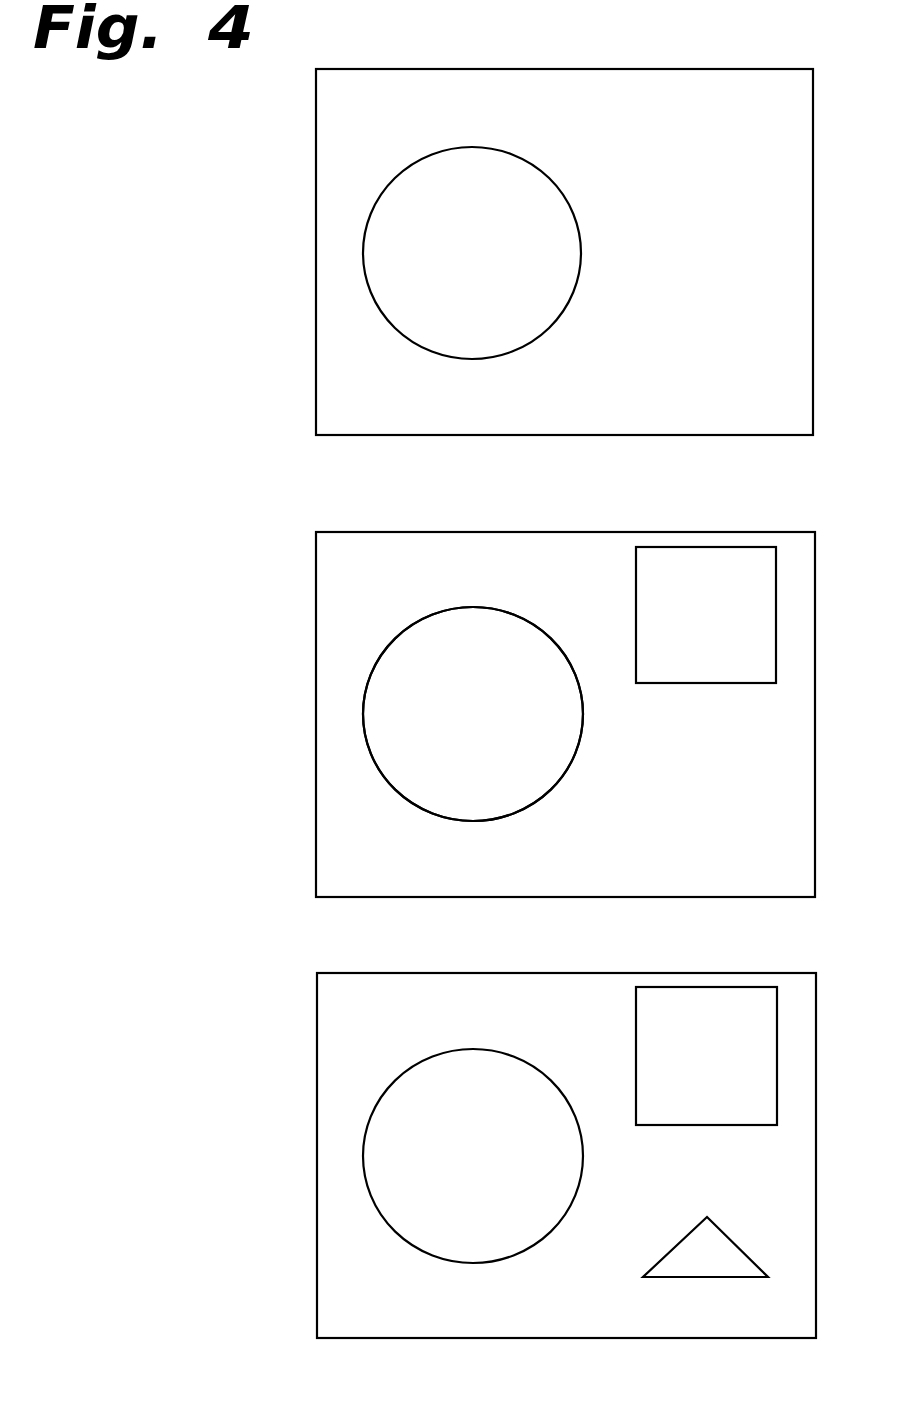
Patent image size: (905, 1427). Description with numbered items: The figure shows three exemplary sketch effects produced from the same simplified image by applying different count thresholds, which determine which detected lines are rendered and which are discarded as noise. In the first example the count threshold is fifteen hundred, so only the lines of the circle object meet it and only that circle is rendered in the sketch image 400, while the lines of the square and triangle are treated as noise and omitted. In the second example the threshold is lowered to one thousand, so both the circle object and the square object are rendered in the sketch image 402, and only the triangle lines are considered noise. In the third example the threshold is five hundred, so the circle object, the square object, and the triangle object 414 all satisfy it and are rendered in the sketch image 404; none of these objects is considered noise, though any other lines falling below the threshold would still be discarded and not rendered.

The sketch image 400 is at (316, 210).
The sketch image 402 is at (316, 710).
The sketch image 404 is at (316, 1137).
The triangle object 414 is at (718, 1225).